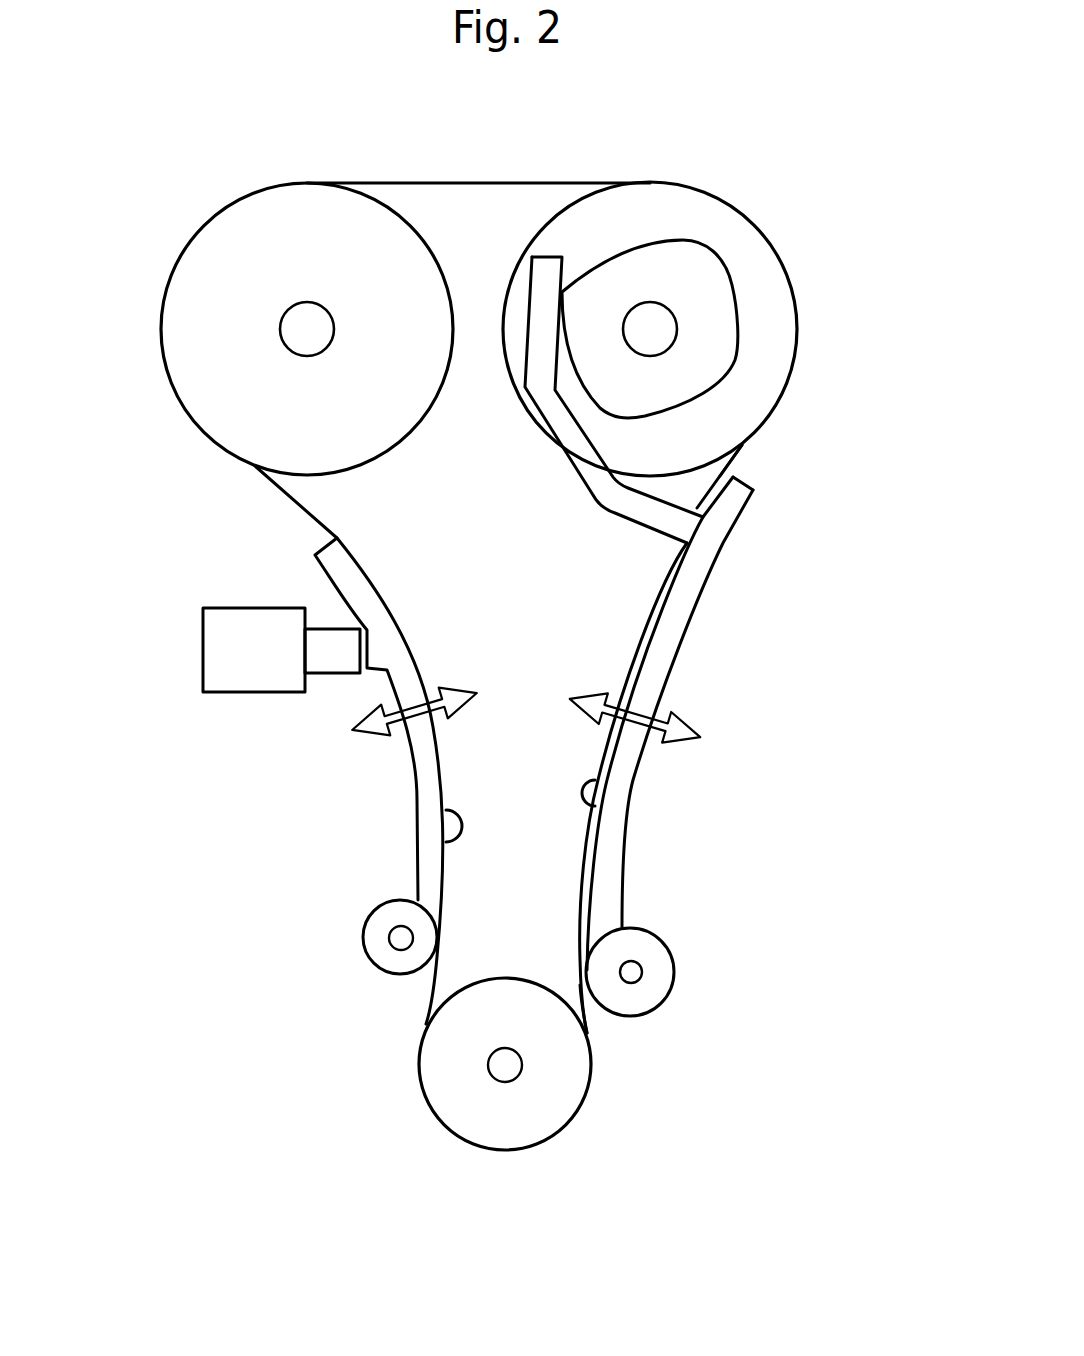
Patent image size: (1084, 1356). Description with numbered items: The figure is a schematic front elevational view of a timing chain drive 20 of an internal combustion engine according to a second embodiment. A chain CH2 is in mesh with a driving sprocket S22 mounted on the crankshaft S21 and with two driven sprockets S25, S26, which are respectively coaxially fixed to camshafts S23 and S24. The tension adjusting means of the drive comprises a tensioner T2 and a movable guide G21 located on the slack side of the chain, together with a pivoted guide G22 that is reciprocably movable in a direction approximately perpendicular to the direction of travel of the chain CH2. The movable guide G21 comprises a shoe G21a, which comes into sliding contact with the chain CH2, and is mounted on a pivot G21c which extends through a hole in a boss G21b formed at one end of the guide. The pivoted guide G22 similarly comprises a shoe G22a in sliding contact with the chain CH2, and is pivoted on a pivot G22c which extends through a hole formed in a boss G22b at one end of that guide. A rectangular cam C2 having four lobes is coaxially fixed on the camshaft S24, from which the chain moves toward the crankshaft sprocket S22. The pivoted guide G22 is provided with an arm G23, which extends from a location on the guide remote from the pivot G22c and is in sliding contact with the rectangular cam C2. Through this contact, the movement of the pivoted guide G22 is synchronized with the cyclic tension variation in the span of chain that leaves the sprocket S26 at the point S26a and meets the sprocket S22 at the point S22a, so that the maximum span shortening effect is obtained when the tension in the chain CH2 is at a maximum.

The timing chain drive 20 is at (480, 1173).
The chain CH2 is at (500, 182).
The crankshaft S21 is at (487, 1072).
The driving sprocket S22 is at (548, 1117).
The point S22a is at (587, 1033).
The camshaft S23 is at (283, 313).
The camshaft S24 is at (670, 308).
The driven sprocket S25 is at (202, 375).
The driven sprocket S26 is at (770, 383).
The point S26a is at (743, 445).
The rectangular cam C2 is at (737, 310).
The tensioner T2 is at (212, 655).
The movable guide G21 is at (180, 813).
The shoe G21a is at (440, 812).
The boss G21b is at (375, 925).
The pivot G21c is at (397, 943).
The pivoted guide G22 is at (857, 792).
The shoe G22a is at (603, 783).
The boss G22b is at (653, 952).
The pivot G22c is at (642, 975).
The arm G23 is at (533, 300).